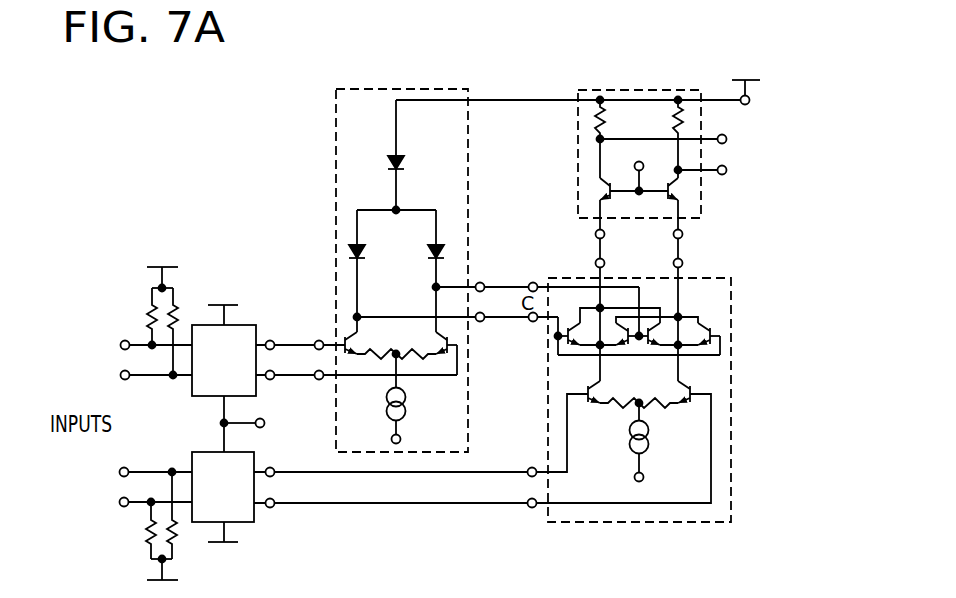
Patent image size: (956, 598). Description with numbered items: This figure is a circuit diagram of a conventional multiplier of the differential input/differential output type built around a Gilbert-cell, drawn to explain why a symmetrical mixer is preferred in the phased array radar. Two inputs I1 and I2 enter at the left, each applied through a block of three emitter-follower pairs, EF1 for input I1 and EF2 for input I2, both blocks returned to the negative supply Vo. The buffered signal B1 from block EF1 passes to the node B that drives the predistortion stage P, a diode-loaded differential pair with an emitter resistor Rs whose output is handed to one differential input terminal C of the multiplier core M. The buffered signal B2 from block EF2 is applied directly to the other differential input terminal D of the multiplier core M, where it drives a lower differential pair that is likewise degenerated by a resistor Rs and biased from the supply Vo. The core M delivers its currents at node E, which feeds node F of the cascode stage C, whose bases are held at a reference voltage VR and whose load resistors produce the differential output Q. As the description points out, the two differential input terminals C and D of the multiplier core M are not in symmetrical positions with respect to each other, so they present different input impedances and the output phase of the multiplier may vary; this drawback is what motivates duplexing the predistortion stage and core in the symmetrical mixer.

The predistortion stage P is at (499, 240).
The differential input terminal of the multiplier core C is at (648, 148).
The multiplier core M is at (544, 421).
The first emitter follower pairs block EF1 is at (224, 378).
The second emitter follower pairs block EF2 is at (223, 497).
The input I1 is at (146, 323).
The input I2 is at (146, 524).
The first emitter follower output B1 is at (356, 360).
The predistortion stage input node B is at (316, 360).
The second emitter follower output B2 is at (391, 488).
The differential input terminal of the multiplier core D is at (529, 488).
The multiplier core output node E is at (639, 264).
The cascode stage input node F is at (639, 235).
The output Q is at (768, 155).
The reference voltage VR is at (629, 173).
The emitter degeneration resistor Rs is at (517, 366).
The negative supply voltage Vo is at (462, 475).